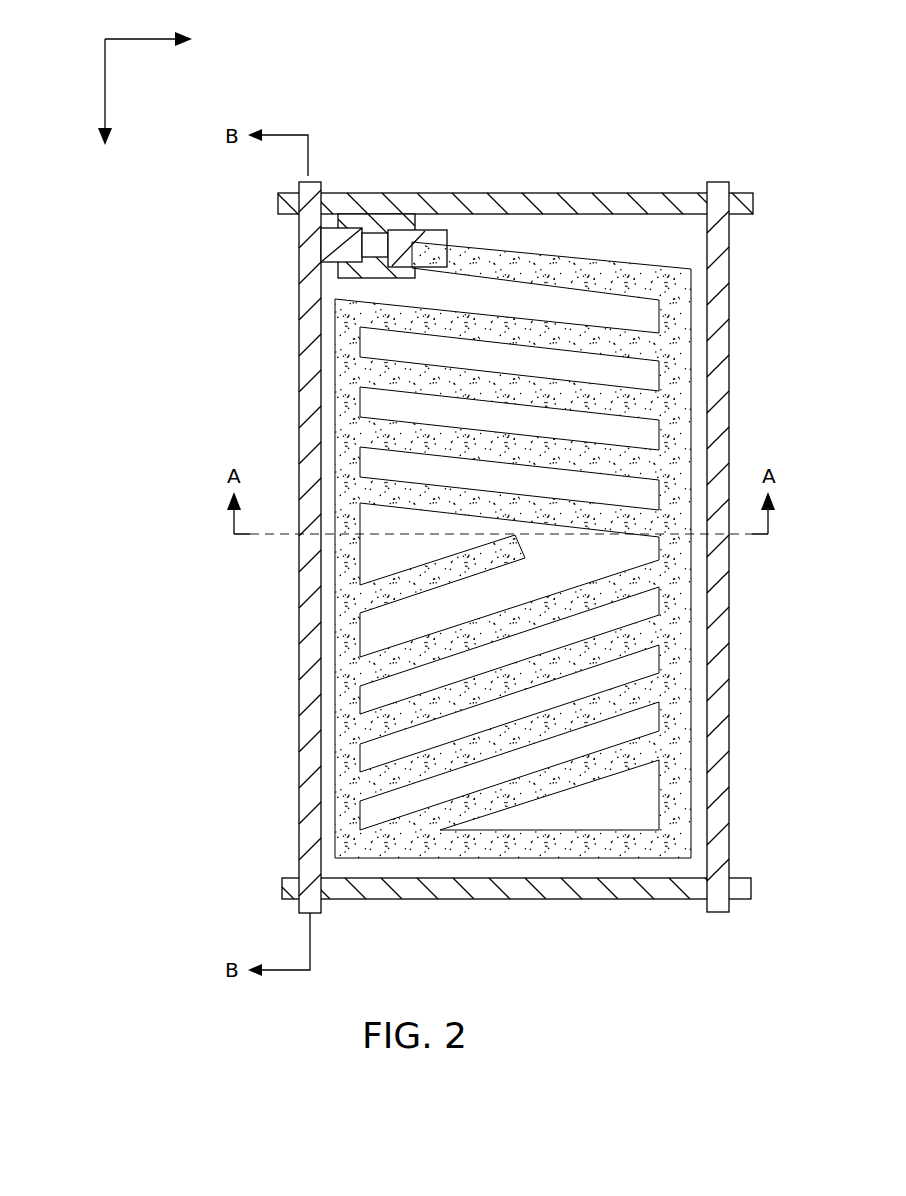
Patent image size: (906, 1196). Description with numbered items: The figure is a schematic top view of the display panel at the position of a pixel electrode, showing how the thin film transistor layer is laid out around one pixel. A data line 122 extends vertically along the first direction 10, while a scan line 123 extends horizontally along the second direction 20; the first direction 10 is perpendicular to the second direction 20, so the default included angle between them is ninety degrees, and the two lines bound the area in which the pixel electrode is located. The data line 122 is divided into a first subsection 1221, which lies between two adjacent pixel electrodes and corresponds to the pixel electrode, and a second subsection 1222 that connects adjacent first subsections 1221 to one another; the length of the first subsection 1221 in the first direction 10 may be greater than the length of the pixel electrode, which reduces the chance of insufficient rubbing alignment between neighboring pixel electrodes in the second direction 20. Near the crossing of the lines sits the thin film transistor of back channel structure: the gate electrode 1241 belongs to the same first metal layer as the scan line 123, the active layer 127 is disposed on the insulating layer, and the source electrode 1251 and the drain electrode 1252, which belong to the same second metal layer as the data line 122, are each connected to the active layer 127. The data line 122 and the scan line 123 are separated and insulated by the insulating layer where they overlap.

The first direction 10 is at (99, 106).
The second direction 20 is at (163, 28).
The data line 122 is at (386, 494).
The first subsection 1221 is at (299, 779).
The second subsection 1222 is at (333, 858).
The scan line 123 is at (657, 193).
The gate electrode 1241 is at (352, 222).
The source electrode 1251 is at (360, 236).
The drain electrode 1252 is at (405, 233).
The active layer 127 is at (377, 233).